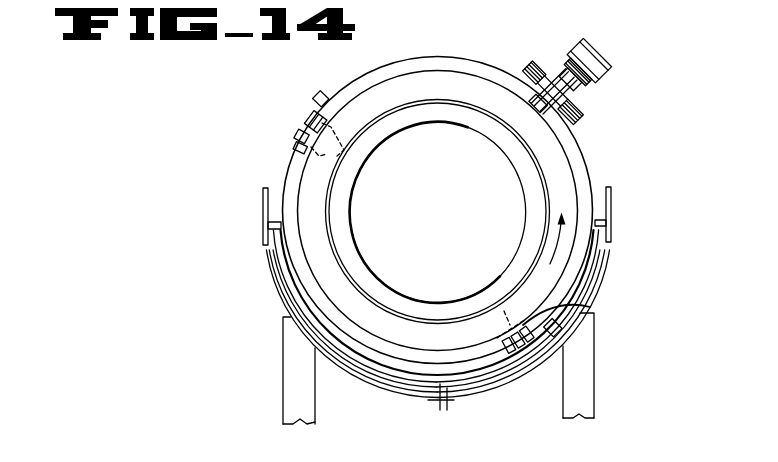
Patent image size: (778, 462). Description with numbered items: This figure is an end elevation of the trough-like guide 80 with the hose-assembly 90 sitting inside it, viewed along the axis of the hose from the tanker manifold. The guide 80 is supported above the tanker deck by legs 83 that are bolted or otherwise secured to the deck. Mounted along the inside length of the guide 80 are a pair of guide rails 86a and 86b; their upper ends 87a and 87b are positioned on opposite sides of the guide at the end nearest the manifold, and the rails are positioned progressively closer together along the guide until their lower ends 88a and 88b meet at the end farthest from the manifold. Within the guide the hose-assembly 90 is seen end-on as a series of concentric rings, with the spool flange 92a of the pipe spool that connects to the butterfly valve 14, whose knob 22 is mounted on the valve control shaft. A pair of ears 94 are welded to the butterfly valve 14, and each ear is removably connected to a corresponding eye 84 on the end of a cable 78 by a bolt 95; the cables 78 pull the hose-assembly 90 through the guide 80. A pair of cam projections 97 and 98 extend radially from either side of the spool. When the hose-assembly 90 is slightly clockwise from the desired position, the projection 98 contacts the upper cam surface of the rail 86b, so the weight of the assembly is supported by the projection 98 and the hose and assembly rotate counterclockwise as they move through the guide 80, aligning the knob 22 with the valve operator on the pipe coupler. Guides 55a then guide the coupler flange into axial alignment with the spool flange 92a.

The butterfly valve 14 is at (438, 54).
The hose-assembly 90 is at (506, 48).
The knob 22 is at (592, 72).
The guides 55a is at (563, 97).
The spool flange 92a is at (553, 143).
The cam projection 97 is at (313, 96).
The bolt 95 is at (305, 118).
The cables 78 is at (299, 135).
The eye 84 is at (299, 147).
The ears 94 is at (356, 153).
The upper end of rail 86a 87a is at (263, 225).
The upper end of rail 86b 87b is at (611, 223).
The guide rail 86a is at (276, 258).
The guide rail 86b is at (587, 280).
The trough-like guide 80 is at (427, 314).
The legs 83 is at (283, 355).
The lower end of rail 86a 88a is at (431, 398).
The lower end of rail 86b 88b is at (444, 406).
The cam projection 98 is at (590, 338).